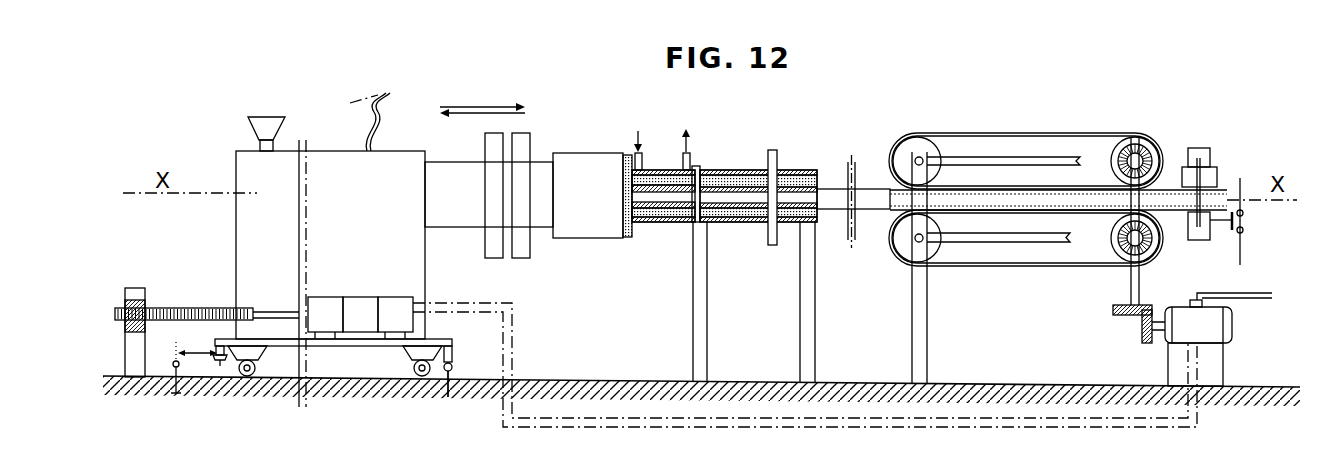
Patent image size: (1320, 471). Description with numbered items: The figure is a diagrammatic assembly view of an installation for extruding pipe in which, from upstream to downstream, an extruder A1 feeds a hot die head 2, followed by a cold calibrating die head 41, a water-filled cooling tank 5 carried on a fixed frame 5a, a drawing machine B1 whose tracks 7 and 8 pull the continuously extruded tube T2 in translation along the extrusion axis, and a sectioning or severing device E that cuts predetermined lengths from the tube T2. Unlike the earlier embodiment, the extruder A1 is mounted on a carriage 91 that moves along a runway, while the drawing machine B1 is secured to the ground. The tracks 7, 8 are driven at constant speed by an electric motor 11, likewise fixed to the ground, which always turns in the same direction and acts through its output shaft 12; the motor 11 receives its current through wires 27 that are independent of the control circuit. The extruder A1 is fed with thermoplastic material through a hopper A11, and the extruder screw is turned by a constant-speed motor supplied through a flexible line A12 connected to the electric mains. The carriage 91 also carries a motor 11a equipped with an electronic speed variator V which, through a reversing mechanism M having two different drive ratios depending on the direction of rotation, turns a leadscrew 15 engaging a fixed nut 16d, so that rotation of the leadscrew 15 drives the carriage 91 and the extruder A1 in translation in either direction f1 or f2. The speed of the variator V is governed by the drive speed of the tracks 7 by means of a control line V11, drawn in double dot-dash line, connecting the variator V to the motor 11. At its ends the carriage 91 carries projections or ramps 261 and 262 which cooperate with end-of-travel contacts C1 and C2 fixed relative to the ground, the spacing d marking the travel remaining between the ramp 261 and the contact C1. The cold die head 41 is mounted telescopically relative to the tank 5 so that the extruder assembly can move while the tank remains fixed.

The extruder A1 is at (330, 245).
The hopper A11 is at (263, 130).
The flexible line A12 is at (370, 128).
The leadscrew 15 is at (180, 308).
The fixed support 16d is at (133, 357).
The end-of-travel contact C1 is at (173, 362).
The displacement d is at (197, 341).
The projection or ramp 261 is at (222, 366).
The carriage 91 is at (328, 346).
The motor 11a is at (363, 297).
The projection or ramp 262 is at (452, 362).
The end-of-travel contact C2 is at (450, 373).
The control line V11 is at (927, 424).
The direction of displacement f1 is at (482, 129).
The direction of displacement f2 is at (482, 93).
The hot die head 2 is at (574, 239).
The cold calibrating die head 41 is at (660, 222).
The cooling tank 5 is at (725, 222).
The fixed frame 5a is at (801, 303).
The continuously extruded tube T2 is at (895, 198).
The drawing machine B1 is at (1026, 229).
The tracks 7 is at (988, 133).
The lower belt 8 is at (987, 238).
The sectioning or severing device E is at (1207, 148).
The output shaft 12 is at (1155, 322).
The electric motor 11 is at (1217, 328).
The wires 27 is at (1257, 289).